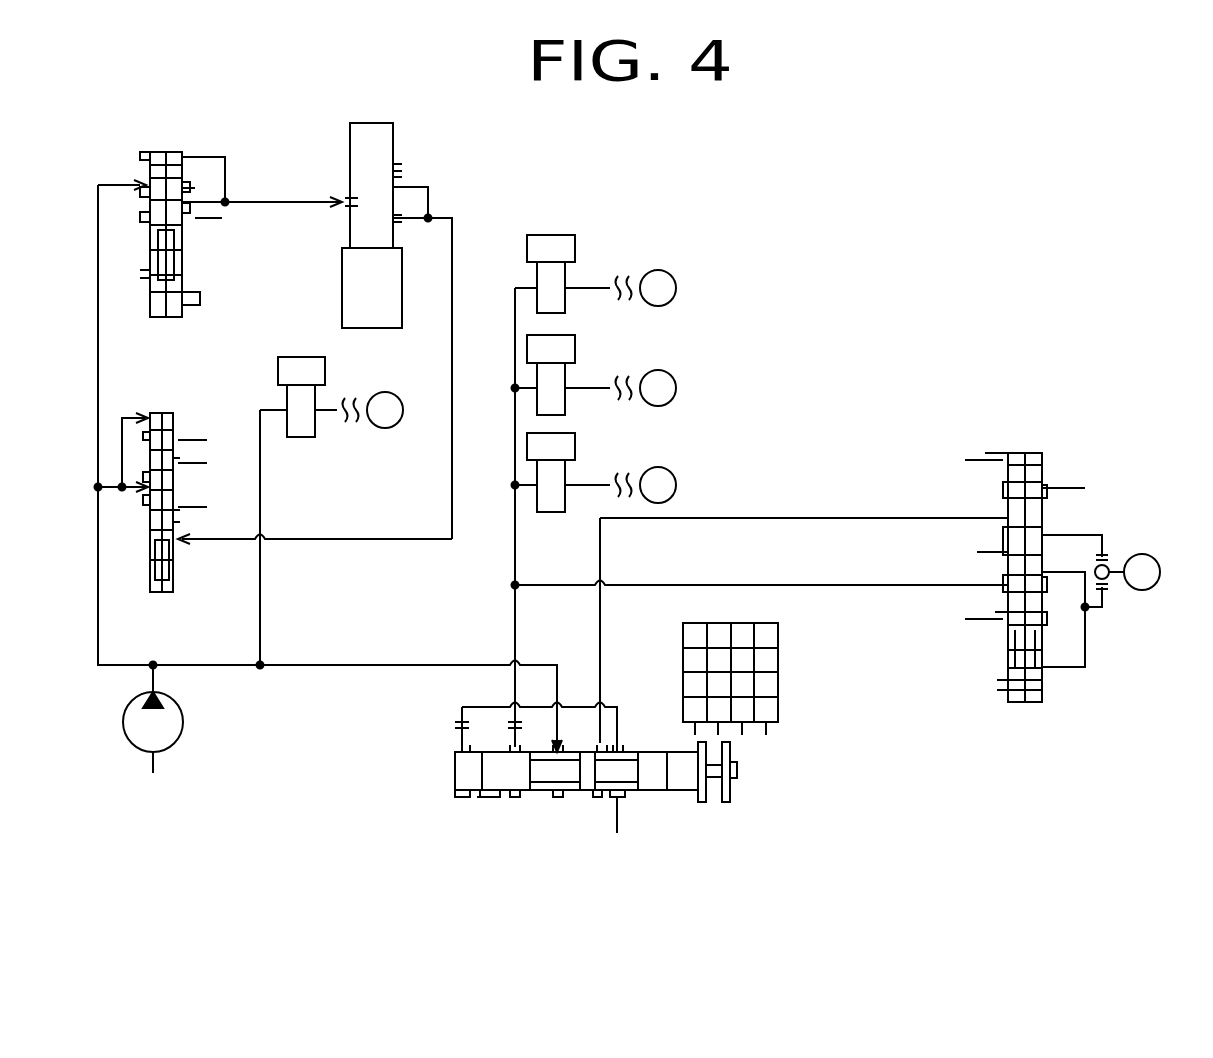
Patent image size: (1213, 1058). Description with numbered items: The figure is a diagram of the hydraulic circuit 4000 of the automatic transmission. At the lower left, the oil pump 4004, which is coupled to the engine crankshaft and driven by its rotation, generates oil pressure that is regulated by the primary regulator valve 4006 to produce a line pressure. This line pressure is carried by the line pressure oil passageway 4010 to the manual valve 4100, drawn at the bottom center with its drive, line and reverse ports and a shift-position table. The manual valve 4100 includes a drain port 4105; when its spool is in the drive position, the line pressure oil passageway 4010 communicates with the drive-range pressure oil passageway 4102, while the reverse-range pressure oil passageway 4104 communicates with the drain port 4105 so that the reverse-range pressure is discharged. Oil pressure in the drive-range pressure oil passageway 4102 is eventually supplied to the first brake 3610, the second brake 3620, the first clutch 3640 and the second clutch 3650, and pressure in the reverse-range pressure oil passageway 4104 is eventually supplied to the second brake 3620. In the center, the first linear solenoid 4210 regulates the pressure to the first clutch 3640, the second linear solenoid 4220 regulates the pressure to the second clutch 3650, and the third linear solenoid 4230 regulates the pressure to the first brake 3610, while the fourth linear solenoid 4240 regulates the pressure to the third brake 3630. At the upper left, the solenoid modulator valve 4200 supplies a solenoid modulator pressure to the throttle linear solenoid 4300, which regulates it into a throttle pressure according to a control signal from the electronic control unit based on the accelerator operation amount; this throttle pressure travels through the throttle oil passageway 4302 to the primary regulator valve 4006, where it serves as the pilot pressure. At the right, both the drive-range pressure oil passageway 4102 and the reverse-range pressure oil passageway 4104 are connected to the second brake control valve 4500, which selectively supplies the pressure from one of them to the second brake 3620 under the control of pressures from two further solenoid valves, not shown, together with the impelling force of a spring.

The hydraulic circuit 4000 is at (697, 158).
The oil pump 4004 is at (183, 706).
The primary regulator valve 4006 is at (157, 591).
The line pressure oil passageway 4010 is at (217, 643).
The manual valve 4100 is at (442, 786).
The D-range pressure oil passageway 4102 is at (560, 625).
The R-range pressure oil passageway 4104 is at (645, 627).
The drain port 4105 is at (634, 806).
The solenoid modulator valve 4200 is at (170, 330).
The SL1 linear solenoid 4210 is at (576, 258).
The SL2 linear solenoid 4220 is at (576, 358).
The SL3 linear solenoid 4230 is at (576, 458).
The SL4 linear solenoid 4240 is at (301, 356).
The SLT linear solenoid 4300 is at (352, 278).
The SLT oil passageway 4302 is at (402, 540).
The B2 control valve 4500 is at (1068, 471).
The B1 brake 3610 is at (658, 470).
The B2 brake 3620 is at (1142, 593).
The B3 brake 3630 is at (383, 392).
The C1 clutch 3640 is at (658, 270).
The C2 clutch 3650 is at (658, 370).